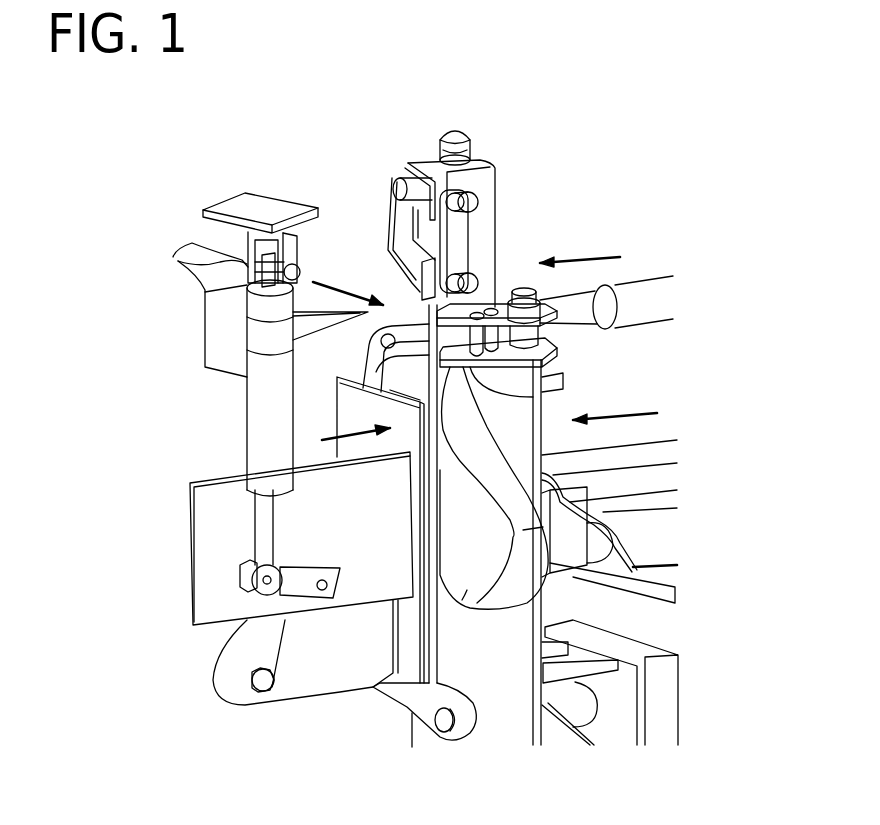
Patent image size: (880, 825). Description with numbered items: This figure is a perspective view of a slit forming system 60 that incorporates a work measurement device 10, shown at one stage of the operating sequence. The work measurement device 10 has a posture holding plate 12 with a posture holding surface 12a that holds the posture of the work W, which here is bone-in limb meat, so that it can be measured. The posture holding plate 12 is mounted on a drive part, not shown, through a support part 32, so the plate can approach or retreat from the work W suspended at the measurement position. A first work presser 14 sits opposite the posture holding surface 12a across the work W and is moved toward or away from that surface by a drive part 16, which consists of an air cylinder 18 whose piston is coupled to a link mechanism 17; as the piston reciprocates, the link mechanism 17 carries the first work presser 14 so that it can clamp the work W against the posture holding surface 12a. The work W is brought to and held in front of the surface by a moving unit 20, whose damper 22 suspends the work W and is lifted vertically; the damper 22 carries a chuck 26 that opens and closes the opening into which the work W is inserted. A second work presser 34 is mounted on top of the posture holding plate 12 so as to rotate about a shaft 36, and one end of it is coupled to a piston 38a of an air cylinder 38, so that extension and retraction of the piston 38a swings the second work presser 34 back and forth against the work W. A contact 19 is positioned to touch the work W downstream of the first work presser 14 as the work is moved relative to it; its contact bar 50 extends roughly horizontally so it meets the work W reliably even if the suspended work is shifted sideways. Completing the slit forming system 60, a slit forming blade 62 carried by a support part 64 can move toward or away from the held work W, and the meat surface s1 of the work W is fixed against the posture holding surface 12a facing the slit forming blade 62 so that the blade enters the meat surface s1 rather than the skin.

The work measurement device 10 is at (429, 201).
The posture holding plate 12 is at (547, 610).
The posture holding surface 12a is at (547, 620).
The first work presser 14 is at (350, 413).
The drive part 16 is at (182, 540).
The link mechanism 17 is at (260, 637).
The air cylinder 18 is at (245, 375).
The contact 19 is at (355, 350).
The moving unit 20 is at (483, 162).
The damper 22 is at (485, 193).
The chuck 26 is at (395, 230).
The support part 32 is at (648, 482).
The second work presser 34 is at (560, 400).
The shaft 36 is at (527, 292).
The air cylinder 38 is at (650, 283).
The piston 38a is at (567, 322).
The contact bar 50 is at (398, 322).
The slit forming system 60 is at (133, 313).
The slit forming blade 62 is at (262, 370).
The support part 64 is at (207, 312).
The work W is at (503, 445).
The meat surface s1 is at (458, 545).